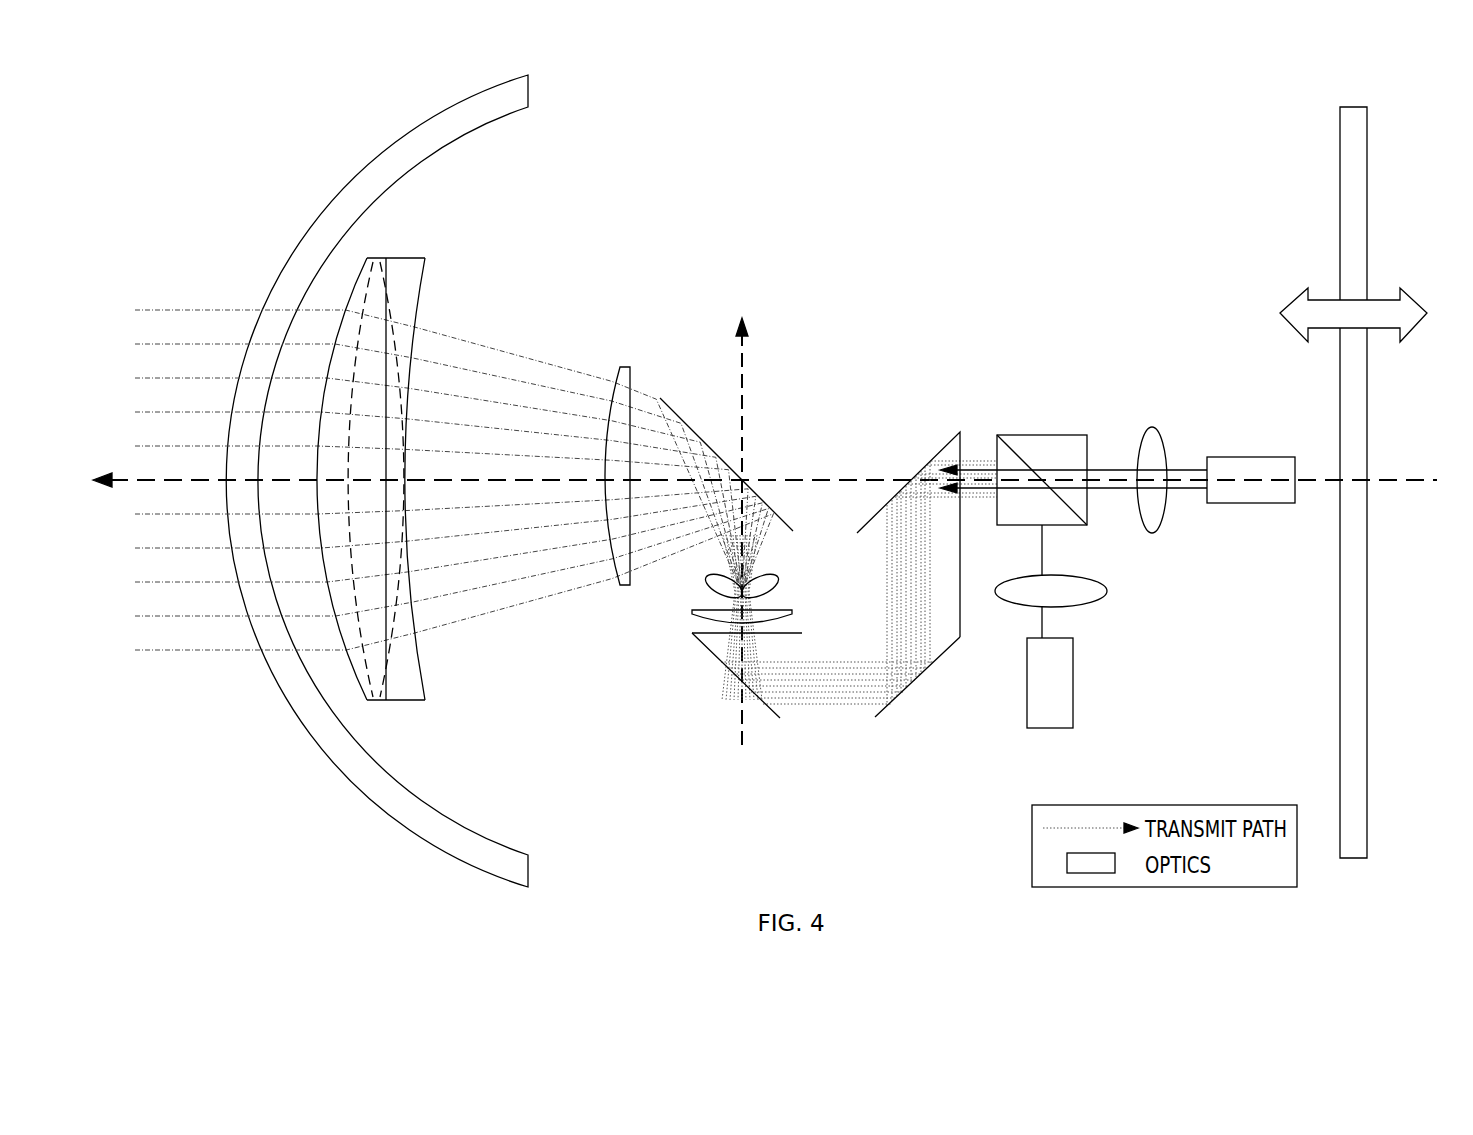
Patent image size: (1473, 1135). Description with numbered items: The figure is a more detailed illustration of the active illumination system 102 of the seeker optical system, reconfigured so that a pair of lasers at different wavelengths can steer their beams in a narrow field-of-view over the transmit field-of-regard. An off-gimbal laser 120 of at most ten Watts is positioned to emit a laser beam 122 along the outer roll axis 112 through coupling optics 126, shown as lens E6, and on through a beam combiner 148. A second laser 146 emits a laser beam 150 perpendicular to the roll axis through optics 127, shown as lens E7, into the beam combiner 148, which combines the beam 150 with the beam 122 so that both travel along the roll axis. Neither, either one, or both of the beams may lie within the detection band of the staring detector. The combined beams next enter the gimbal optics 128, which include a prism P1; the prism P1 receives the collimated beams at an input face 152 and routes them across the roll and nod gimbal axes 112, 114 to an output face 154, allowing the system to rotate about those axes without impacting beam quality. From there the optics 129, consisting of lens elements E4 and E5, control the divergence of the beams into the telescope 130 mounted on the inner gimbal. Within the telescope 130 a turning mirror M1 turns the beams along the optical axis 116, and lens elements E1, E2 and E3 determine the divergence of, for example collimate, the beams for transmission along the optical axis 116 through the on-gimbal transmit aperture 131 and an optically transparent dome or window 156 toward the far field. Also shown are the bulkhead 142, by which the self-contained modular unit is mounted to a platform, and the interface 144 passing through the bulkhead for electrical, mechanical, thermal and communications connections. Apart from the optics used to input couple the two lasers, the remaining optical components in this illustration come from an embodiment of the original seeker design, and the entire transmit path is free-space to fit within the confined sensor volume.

The active illumination system 102 is at (1133, 188).
The outer (roll) gimbal axis 112 is at (1400, 482).
The inner (nod) gimbal axis 114 is at (745, 372).
The optical axis 116 is at (157, 483).
The laser 120 is at (1253, 457).
The laser beam 122 is at (1070, 470).
The coupling optics 126 is at (1172, 480).
The optics 127 is at (1067, 591).
The gimbal optics 128 is at (830, 717).
The optics 129 is at (754, 594).
The telescope 130 is at (484, 491).
The on-gimbal transmit aperture 131 is at (425, 479).
The bulkhead 142 is at (1368, 195).
The interface 144 is at (1292, 300).
The laser 146 is at (1073, 682).
The beam combiner 148 is at (1060, 465).
The laser beam 150 is at (1047, 613).
The input face 152 is at (963, 442).
The output face 154 is at (778, 634).
The optically transparent dome (or window) 156 is at (370, 166).
The lens element E1 is at (353, 464).
The lens element E2 is at (429, 479).
The lens element E3 is at (620, 460).
The lens element E4 is at (730, 582).
The lens element E5 is at (727, 614).
The lens E6 is at (1176, 407).
The lens E7 is at (1038, 591).
The turning mirror M1 is at (726, 463).
The prism P1 is at (843, 556).